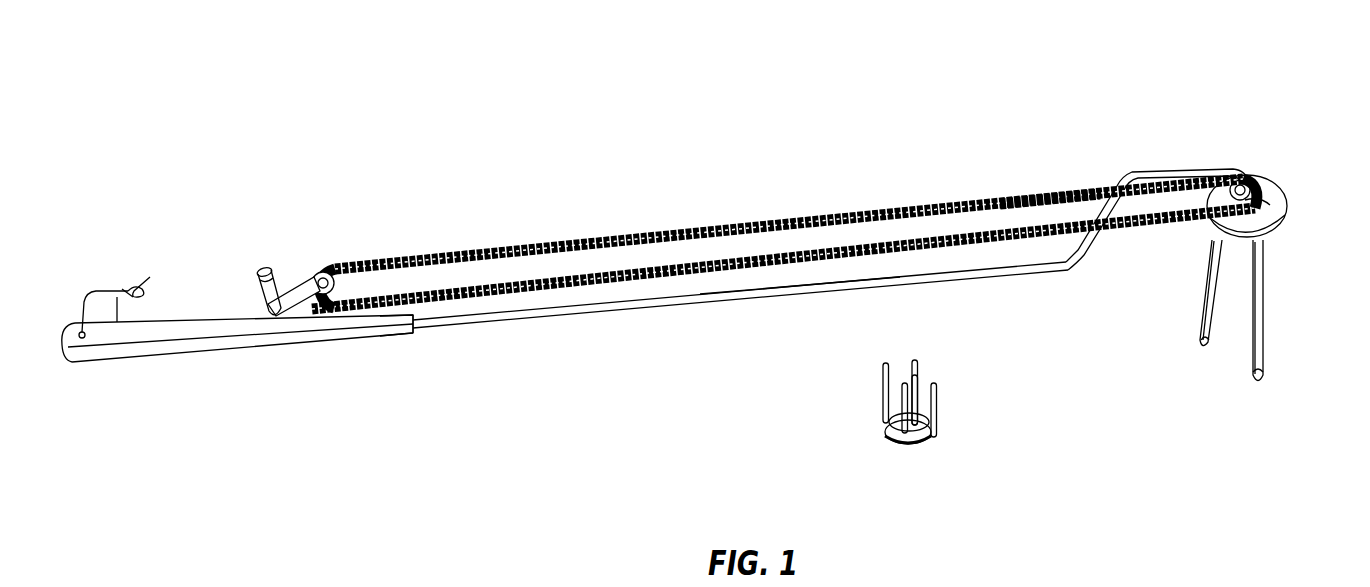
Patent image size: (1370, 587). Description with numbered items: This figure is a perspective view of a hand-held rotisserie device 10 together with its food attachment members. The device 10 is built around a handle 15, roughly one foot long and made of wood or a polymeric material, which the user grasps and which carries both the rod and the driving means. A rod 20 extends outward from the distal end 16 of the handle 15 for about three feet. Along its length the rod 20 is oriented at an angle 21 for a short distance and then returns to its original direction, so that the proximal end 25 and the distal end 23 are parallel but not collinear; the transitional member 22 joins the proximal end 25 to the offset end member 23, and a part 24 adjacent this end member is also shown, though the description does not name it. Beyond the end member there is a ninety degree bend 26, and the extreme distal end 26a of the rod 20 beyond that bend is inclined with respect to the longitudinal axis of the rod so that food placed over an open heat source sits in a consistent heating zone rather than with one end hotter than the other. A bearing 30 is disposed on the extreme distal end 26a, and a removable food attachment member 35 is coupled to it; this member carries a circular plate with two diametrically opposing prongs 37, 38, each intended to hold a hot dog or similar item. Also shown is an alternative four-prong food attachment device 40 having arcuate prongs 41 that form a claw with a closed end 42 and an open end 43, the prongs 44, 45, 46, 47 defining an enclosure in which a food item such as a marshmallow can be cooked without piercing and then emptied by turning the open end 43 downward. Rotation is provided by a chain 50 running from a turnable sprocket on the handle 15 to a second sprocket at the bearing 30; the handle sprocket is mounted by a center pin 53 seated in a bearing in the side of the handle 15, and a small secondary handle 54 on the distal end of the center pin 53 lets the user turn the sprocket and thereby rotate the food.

The rotisserie device 10 is at (566, 147).
The handle 15 is at (130, 348).
The distal end of the handle 16 is at (413, 328).
The rod 20 is at (681, 302).
The angle 21 is at (1075, 266).
The transitional member 22 is at (1088, 188).
The distal end of the rod 23 is at (1243, 153).
The pin 24 is at (1243, 180).
The proximal end of the rod 25 is at (803, 283).
The ninety degree bend 26 is at (1262, 188).
The extreme distal end of the rod 26a is at (1280, 213).
The bearing 30 is at (1268, 244).
The removable food attachment member 35 is at (1290, 343).
The prong 37 is at (1250, 345).
The prong 38 is at (1205, 295).
The four-prong food attachment device 40 is at (906, 401).
The arcuate prongs 41 is at (920, 361).
The closed end 42 is at (884, 432).
The open end 43 is at (905, 362).
The prong 44 is at (885, 415).
The prong 45 is at (880, 378).
The prong 46 is at (930, 380).
The prong 47 is at (934, 454).
The chain 50 is at (490, 251).
The center pin 53 is at (323, 272).
The secondary handle 54 is at (258, 292).